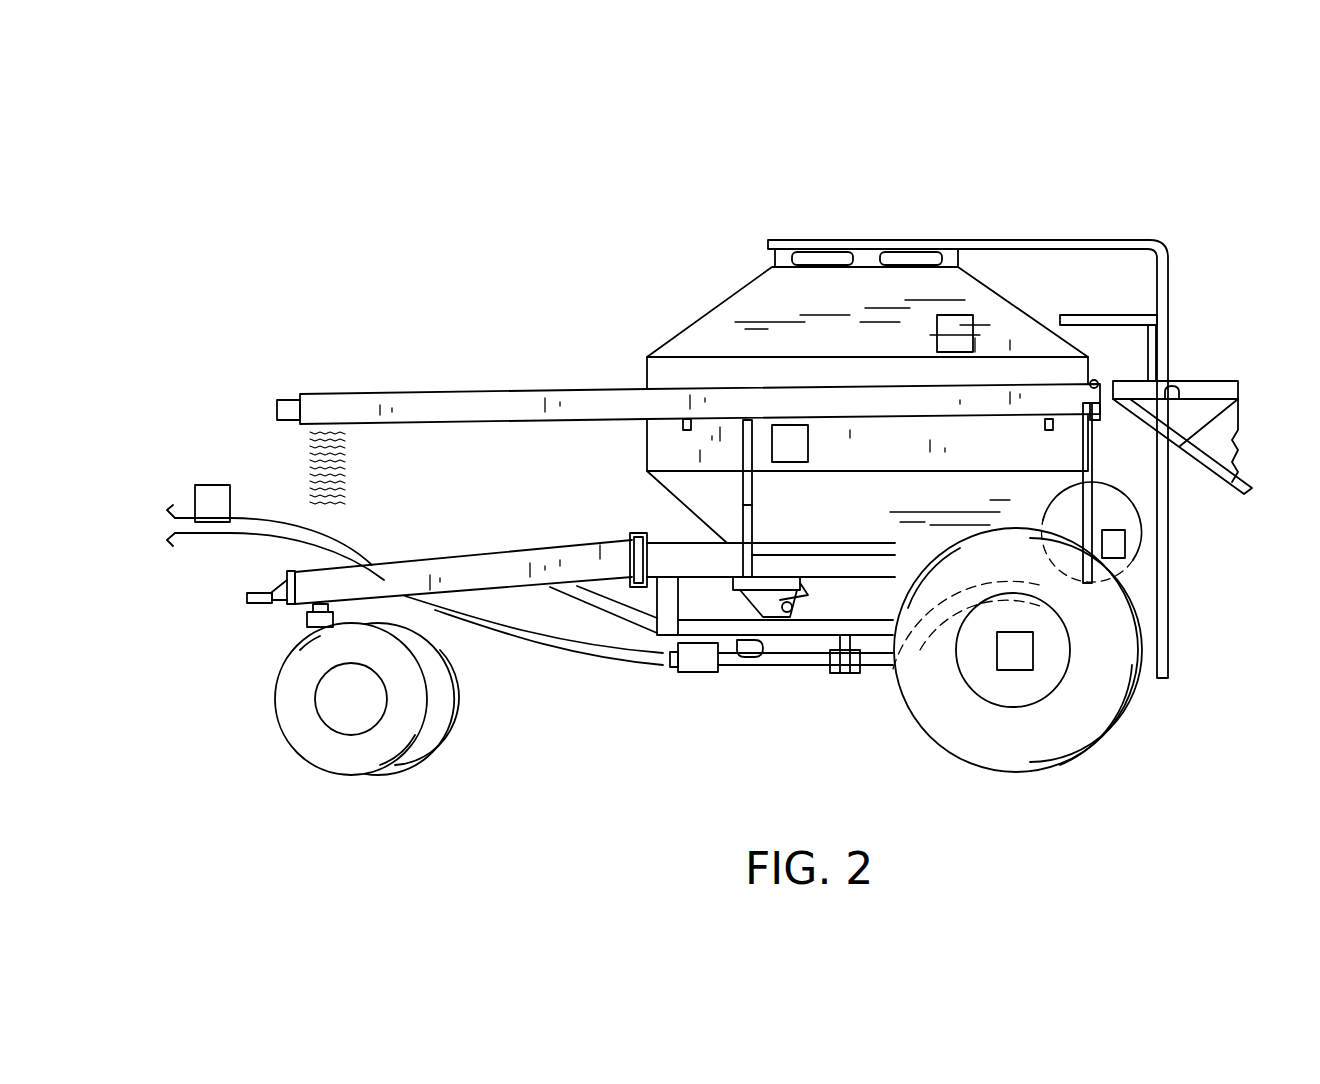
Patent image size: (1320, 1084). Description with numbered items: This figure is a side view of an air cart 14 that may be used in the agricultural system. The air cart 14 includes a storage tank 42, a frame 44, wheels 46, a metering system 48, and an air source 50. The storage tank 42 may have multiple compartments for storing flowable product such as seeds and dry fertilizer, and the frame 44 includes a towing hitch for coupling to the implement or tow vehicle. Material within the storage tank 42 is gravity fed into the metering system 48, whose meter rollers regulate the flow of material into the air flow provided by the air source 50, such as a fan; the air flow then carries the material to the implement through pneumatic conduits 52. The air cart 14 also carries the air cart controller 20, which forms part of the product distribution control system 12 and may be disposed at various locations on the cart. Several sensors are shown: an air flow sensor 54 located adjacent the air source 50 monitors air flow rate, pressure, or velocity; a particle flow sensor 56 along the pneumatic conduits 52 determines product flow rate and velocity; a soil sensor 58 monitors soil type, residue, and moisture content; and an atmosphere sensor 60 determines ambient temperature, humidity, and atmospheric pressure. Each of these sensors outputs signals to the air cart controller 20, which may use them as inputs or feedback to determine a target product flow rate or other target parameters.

The air cart 14 is at (711, 199).
The product distribution control system 12 is at (624, 367).
The storage tank 42 is at (749, 300).
The atmosphere sensor 60 is at (974, 333).
The air cart controller 20 is at (808, 441).
The particle flow sensor 56 is at (212, 485).
The frame 44 is at (456, 557).
The wheels 46 is at (295, 754).
The pneumatic conduits 52 is at (566, 657).
The metering system 48 is at (805, 612).
The air source 50 is at (1107, 517).
The air flow sensor 54 is at (1126, 541).
The soil sensor 58 is at (1015, 672).